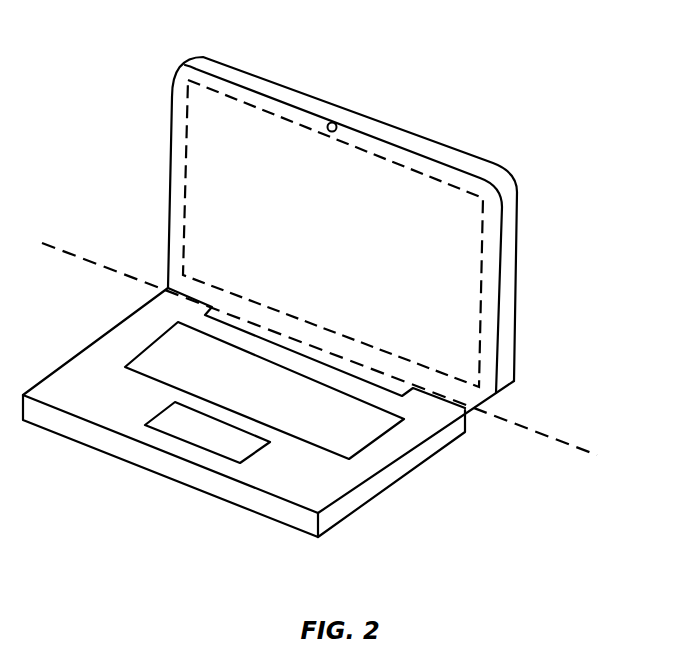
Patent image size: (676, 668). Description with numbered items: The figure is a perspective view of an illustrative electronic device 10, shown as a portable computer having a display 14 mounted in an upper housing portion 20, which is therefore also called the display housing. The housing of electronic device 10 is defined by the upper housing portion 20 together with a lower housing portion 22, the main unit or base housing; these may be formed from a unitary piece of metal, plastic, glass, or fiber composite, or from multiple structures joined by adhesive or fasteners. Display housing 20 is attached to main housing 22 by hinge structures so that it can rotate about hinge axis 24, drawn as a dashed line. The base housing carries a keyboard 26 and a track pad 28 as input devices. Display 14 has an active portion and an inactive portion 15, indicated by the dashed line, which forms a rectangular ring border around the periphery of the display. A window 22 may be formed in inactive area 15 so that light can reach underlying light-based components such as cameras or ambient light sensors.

The electronic device 10 is at (443, 72).
The display 14 is at (452, 278).
The inactive portion 15 is at (493, 338).
The upper housing portion 20 is at (510, 216).
The lower housing portion 22 is at (335, 122).
The hinge axis 24 is at (563, 440).
The keyboard 26 is at (337, 438).
The track pad 28 is at (240, 452).